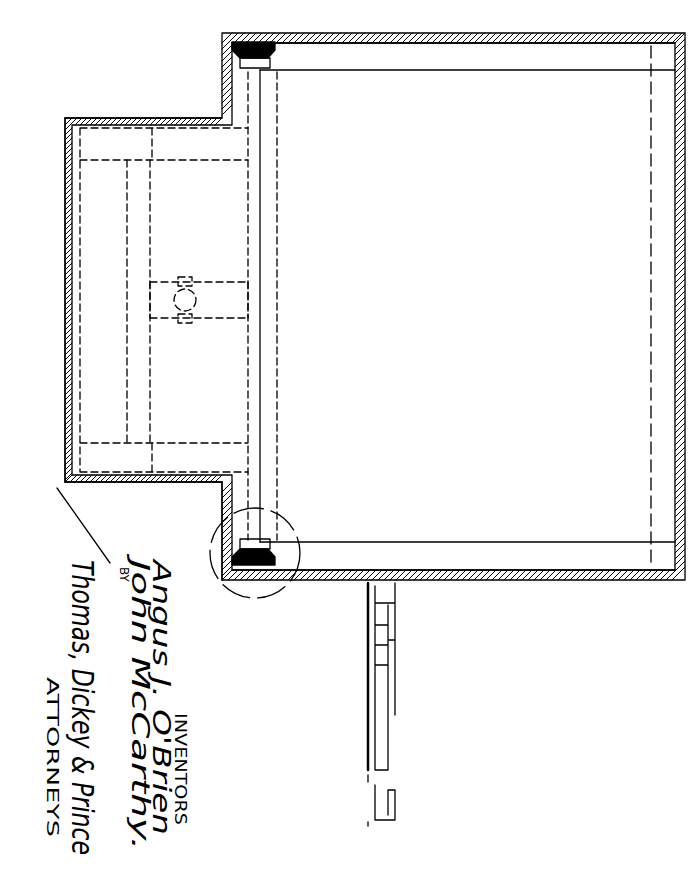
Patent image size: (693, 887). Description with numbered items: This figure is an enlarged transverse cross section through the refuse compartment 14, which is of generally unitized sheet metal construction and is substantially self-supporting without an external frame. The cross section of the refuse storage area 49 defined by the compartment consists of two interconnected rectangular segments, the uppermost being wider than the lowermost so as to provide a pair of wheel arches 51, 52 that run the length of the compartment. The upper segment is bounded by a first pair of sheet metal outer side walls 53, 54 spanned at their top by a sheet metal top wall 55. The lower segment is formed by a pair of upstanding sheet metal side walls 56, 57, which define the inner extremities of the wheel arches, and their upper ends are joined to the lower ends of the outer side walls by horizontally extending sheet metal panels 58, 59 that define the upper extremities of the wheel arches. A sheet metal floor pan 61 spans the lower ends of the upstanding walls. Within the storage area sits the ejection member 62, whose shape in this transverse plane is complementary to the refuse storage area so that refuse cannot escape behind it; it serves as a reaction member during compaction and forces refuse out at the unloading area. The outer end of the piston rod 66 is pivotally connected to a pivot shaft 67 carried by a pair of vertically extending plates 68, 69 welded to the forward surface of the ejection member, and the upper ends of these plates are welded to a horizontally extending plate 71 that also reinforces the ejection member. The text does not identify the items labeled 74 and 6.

The refuse compartment 14 is at (375, 362).
The refuse storage area 49 is at (467, 306).
The wheel arch 51 is at (185, 531).
The wheel arch 52 is at (143, 81).
The outer side wall 53 is at (453, 616).
The outer side wall 54 is at (453, 91).
The top wall 55 is at (641, 306).
The upstanding side wall 56 is at (143, 514).
The upstanding side wall 57 is at (164, 266).
The horizontally extending sheet metal panel 58 is at (228, 534).
The horizontally extending sheet metal panel 59 is at (231, 72).
The floor pan 61 is at (72, 268).
The ejection member 62 is at (408, 699).
The piston rod 66 is at (246, 304).
The pivot shaft 67 is at (199, 348).
The vertically extending plate 68 is at (199, 243).
The vertically extending plate 69 is at (204, 351).
The horizontally extending plate 71 is at (291, 306).
The vertical member 74 is at (119, 301).
The detail circle 6 is at (267, 576).